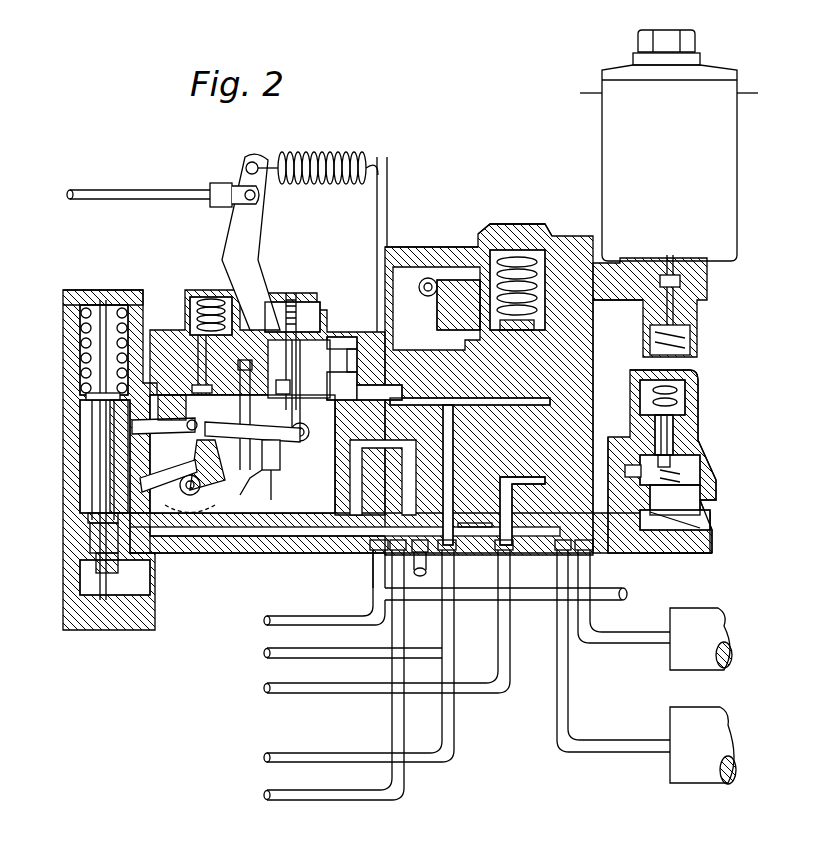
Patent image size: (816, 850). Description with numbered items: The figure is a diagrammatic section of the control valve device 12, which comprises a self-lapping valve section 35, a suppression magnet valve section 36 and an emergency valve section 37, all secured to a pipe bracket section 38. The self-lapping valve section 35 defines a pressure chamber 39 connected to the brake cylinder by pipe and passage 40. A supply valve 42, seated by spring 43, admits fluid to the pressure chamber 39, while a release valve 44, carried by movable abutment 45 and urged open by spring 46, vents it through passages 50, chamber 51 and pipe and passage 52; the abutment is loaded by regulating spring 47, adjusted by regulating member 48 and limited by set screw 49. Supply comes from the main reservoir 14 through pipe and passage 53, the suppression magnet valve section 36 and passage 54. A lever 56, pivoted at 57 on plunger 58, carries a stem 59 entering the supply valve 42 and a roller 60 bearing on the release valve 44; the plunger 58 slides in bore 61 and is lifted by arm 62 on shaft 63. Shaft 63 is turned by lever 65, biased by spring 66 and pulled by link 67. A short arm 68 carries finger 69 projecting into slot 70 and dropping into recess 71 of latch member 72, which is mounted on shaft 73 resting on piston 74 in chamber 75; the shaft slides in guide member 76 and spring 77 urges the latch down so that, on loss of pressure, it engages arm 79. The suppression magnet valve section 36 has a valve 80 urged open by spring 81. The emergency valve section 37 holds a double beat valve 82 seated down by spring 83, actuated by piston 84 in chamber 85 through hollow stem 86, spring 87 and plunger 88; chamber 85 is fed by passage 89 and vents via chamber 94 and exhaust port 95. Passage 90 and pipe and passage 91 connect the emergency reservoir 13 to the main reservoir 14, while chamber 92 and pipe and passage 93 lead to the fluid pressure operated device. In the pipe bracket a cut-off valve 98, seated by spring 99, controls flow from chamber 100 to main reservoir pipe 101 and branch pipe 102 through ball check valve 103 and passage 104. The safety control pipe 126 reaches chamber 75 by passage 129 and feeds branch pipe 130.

The control valve device 12 is at (470, 212).
The emergency reservoir 13 is at (728, 620).
The main reservoir 14 is at (732, 722).
The self-lapping valve section 35 is at (250, 556).
The suppression magnet valve section 36 is at (738, 178).
The emergency valve section 37 is at (714, 441).
The pipe bracket section 38 is at (456, 246).
The pressure chamber 39 is at (282, 555).
The pipe and passage 40 is at (272, 802).
The supply valve 42 is at (192, 350).
The spring 43 is at (210, 335).
The release valve 44 is at (305, 440).
The movable abutment 45 is at (352, 378).
The spring 46 is at (311, 432).
The regulating spring 47 is at (350, 340).
The regulating member 48 is at (322, 302).
The set screw 49 is at (286, 296).
The passages 50 is at (295, 440).
The chamber 51 is at (352, 358).
The pipe and passage 52 is at (426, 540).
The pipe and passage 53 is at (555, 515).
The passage 54 is at (482, 398).
The lever 56 is at (280, 452).
The pivot 57 is at (215, 437).
The plunger 58 is at (262, 485).
The stem 59 is at (186, 400).
The roller 60 is at (282, 485).
The bore 61 is at (238, 410).
The arm 62 is at (200, 490).
The shaft 63 is at (197, 520).
The lever 65 is at (232, 238).
The spring 66 is at (336, 152).
The link 67 is at (158, 178).
The short arm 68 is at (215, 455).
The finger 69 is at (150, 425).
The slot 70 is at (188, 423).
The recess 71 is at (98, 430).
The latch member 72 is at (88, 455).
The shaft 73 is at (100, 495).
The piston 74 is at (90, 555).
The chamber 75 is at (82, 580).
The guide member 76 is at (116, 303).
The spring 77 is at (88, 358).
The arm 79 is at (145, 488).
The valve 80 is at (682, 278).
The spring 81 is at (692, 350).
The double beat valve 82 is at (676, 432).
The spring 83 is at (688, 392).
The piston 84 is at (712, 514).
The chamber 85 is at (698, 542).
The hollow stem 86 is at (700, 475).
The spring 87 is at (712, 490).
The plunger 88 is at (672, 455).
The passage 89 is at (484, 522).
The passage 90 is at (608, 438).
The pipe and passage 91 is at (592, 560).
The chamber 92 is at (629, 470).
The pipe and passage 93 is at (270, 686).
The chamber 94 is at (140, 548).
The exhaust port 95 is at (88, 520).
The cut-off valve 98 is at (545, 302).
The spring 99 is at (500, 224).
The chamber 100 is at (496, 340).
The main reservoir pipe 101 is at (272, 754).
The branch pipe 102 is at (270, 650).
The ball check valve 103 is at (428, 278).
The passage 104 is at (448, 450).
The safety control pipe 126 is at (268, 616).
The passage 129 is at (350, 555).
The branch pipe 130 is at (522, 602).